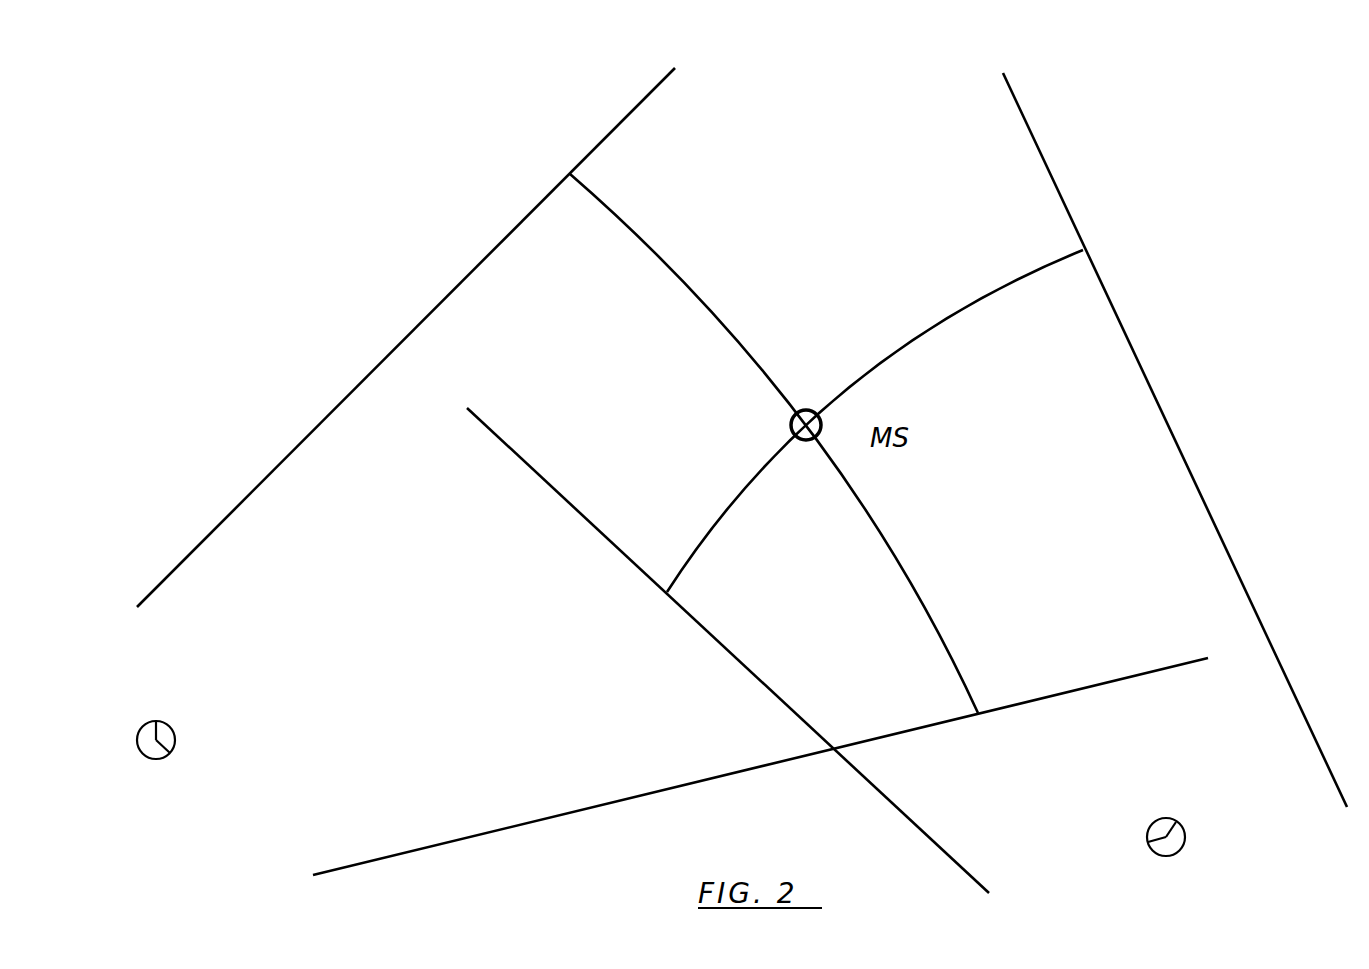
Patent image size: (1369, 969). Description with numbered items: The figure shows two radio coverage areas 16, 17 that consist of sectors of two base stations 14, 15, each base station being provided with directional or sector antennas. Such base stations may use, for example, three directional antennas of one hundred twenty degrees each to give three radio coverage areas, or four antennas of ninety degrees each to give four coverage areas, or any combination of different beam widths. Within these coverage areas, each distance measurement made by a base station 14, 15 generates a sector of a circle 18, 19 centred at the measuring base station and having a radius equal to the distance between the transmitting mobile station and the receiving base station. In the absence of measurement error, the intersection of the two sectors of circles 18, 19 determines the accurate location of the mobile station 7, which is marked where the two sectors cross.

The mobile station 7 is at (817, 408).
The base station 14 is at (177, 739).
The base station 15 is at (1185, 837).
The radio coverage area 16 is at (338, 513).
The radio coverage area 17 is at (1123, 488).
The sector of a circle 18 is at (600, 198).
The sector of a circle 19 is at (1027, 268).